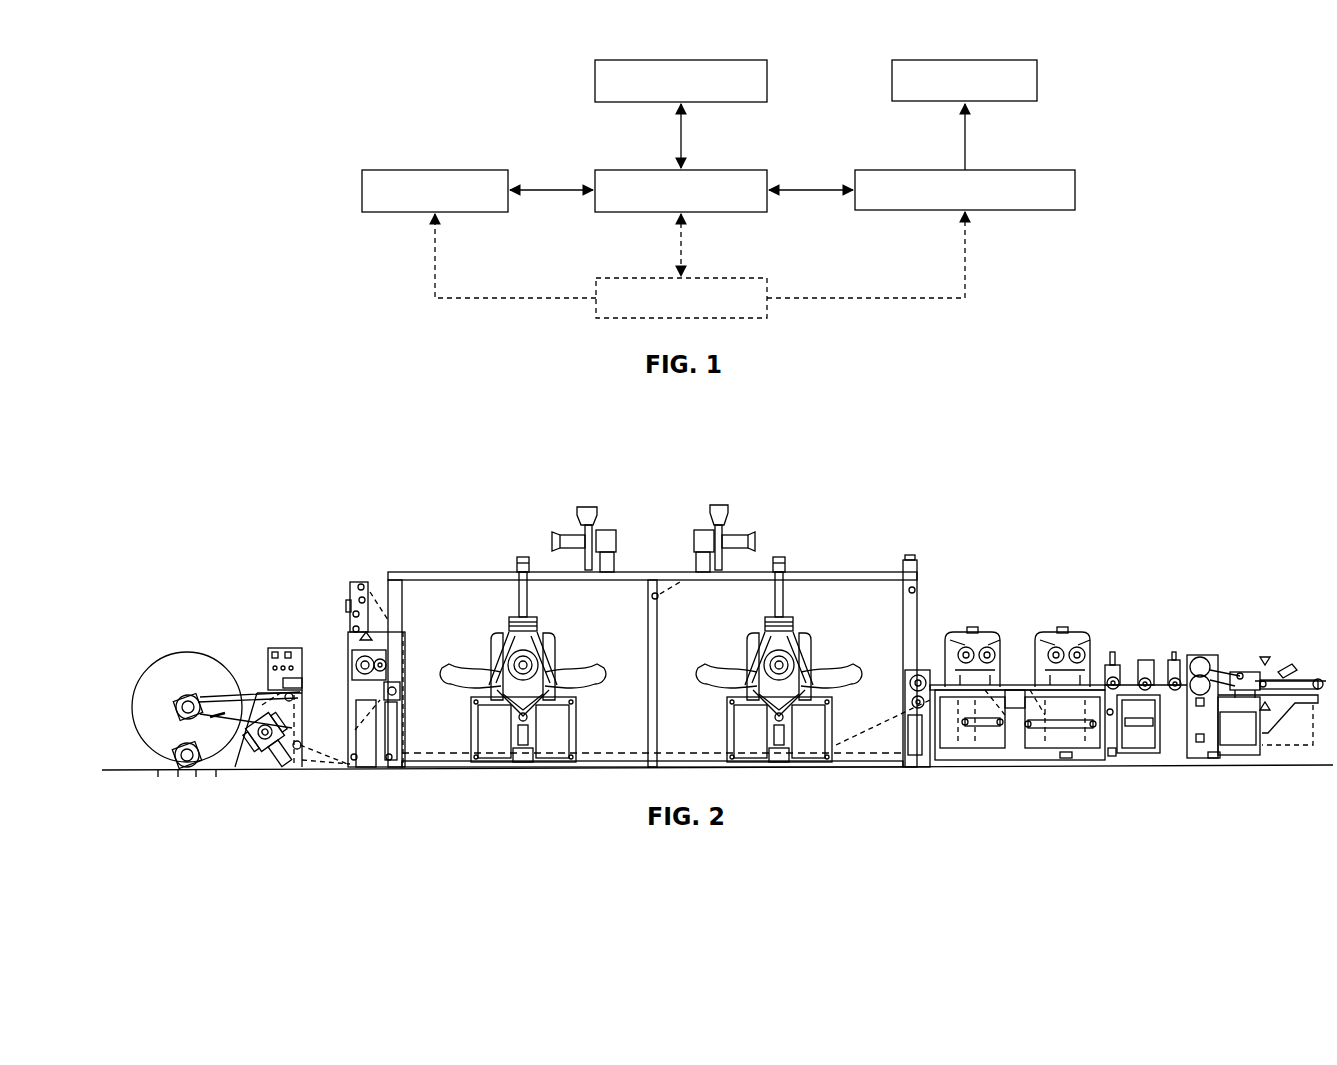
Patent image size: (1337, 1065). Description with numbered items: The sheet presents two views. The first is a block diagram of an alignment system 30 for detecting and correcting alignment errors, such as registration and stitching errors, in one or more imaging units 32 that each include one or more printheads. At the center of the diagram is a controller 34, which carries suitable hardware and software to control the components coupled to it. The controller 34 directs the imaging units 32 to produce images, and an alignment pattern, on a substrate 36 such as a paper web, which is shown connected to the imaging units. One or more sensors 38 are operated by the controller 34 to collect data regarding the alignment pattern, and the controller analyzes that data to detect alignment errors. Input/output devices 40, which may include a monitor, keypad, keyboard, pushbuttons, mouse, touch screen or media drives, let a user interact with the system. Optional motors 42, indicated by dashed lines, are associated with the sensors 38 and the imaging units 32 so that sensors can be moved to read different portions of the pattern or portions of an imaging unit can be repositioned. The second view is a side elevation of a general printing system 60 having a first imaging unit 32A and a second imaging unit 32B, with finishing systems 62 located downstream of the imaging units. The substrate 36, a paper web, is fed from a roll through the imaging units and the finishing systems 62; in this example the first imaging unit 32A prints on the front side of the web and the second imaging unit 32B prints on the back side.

In FIG. 1, the alignment system 30 is at (382, 47).
In FIG. 1, the imaging unit 32 is at (905, 169).
In FIG. 1, the controller 34 is at (644, 169).
In FIG. 1, the substrate 36 is at (942, 59).
In FIG. 2, the substrate 36 is at (190, 651).
In FIG. 1, the sensor 38 is at (411, 169).
In FIG. 1, the input/output device 40 is at (644, 59).
In FIG. 1, the motor 42 is at (645, 277).
In FIG. 2, the printing system 60 is at (236, 489).
In FIG. 2, the first imaging unit 32A is at (497, 613).
In FIG. 2, the second imaging unit 32B is at (806, 613).
In FIG. 2, the finishing system 62 is at (1058, 591).